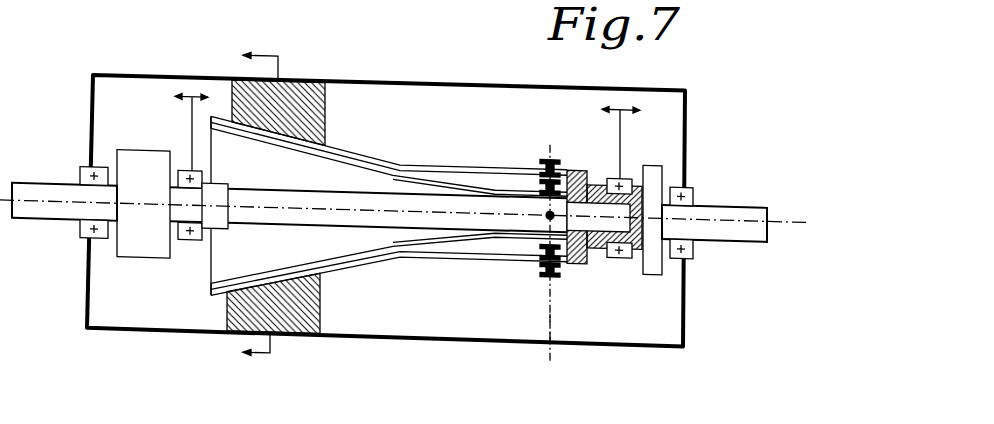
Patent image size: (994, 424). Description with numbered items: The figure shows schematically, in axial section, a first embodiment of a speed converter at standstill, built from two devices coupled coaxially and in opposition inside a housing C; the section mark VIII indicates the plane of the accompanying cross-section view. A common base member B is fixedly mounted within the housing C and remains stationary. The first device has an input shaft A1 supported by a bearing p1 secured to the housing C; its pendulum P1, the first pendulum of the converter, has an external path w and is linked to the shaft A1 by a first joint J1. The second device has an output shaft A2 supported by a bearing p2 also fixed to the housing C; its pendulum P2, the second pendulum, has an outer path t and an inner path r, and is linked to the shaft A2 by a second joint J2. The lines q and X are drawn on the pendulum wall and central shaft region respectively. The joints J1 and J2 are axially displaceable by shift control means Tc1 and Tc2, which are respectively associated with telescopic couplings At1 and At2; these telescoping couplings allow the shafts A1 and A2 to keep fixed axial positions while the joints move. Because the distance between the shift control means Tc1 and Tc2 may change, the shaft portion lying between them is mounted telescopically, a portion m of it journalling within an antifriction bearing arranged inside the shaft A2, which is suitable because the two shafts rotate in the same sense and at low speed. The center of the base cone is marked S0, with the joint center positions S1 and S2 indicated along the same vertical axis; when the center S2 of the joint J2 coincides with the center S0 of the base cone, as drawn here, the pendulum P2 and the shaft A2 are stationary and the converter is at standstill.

The housing C is at (386, 195).
The section line VIII- VIII is at (281, 204).
The common base member B is at (290, 207).
The input shaft A1 is at (64, 226).
The bearing p1 is at (76, 186).
The main shaft X is at (368, 224).
The telescopic coupling At1 is at (143, 231).
The shift control means Tc1 is at (166, 166).
The drum wall outer line q is at (389, 149).
The outer path t is at (389, 146).
The inner path r is at (389, 160).
The external path w is at (463, 161).
The first pendulum P1 is at (389, 267).
The second pendulum P2 is at (389, 270).
The first joint J1 is at (515, 198).
The second joint J2 is at (554, 200).
The shaft portion m is at (598, 217).
The shift control means Tc2 is at (638, 182).
The telescopic coupling At2 is at (631, 248).
The output shaft A2 is at (723, 244).
The bearing p2 is at (704, 207).
The center of the base cone S0 is at (551, 254).
The position S1 is at (551, 313).
The center of joint J2 S2 is at (551, 331).